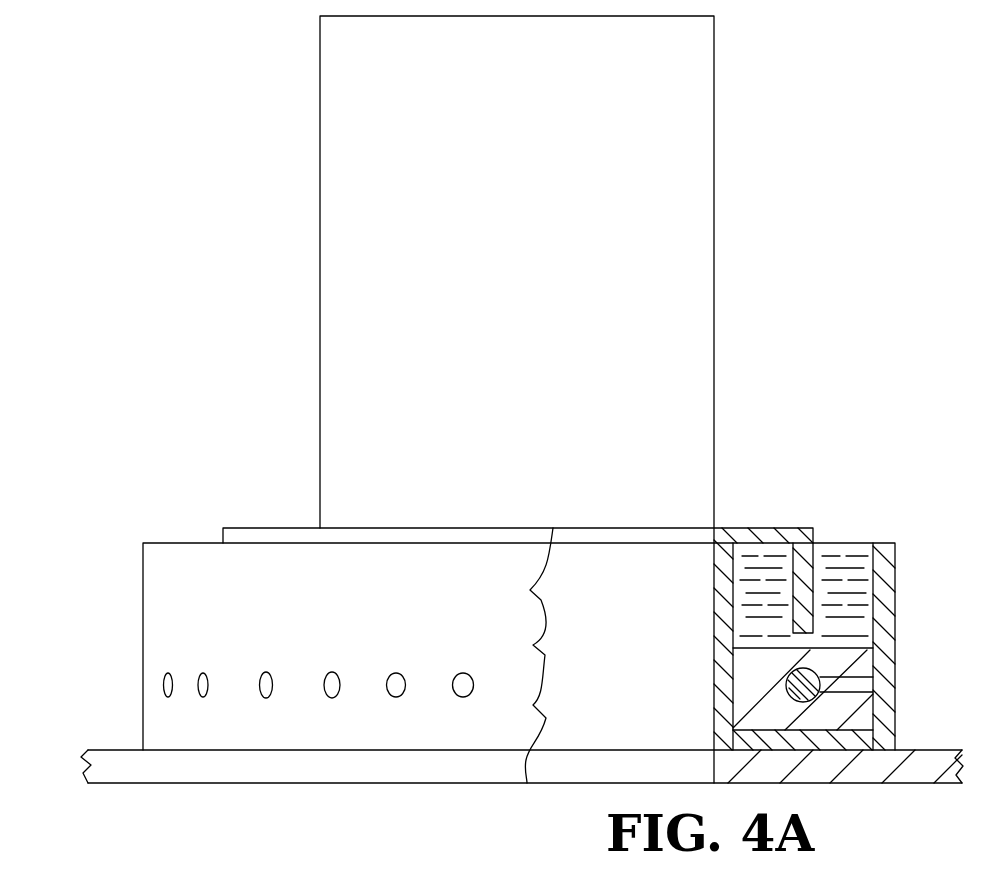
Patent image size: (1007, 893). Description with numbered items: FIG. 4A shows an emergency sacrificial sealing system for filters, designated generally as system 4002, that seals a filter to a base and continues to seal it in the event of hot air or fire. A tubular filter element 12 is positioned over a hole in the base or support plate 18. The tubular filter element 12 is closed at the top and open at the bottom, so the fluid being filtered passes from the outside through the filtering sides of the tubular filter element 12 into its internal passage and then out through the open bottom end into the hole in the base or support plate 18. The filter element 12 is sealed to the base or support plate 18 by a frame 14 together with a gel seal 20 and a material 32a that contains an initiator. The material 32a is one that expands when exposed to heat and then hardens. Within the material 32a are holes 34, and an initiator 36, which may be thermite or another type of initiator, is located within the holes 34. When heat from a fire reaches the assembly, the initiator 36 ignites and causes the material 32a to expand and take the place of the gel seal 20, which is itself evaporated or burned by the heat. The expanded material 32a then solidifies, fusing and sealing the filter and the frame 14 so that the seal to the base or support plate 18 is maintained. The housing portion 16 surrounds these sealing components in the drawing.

The display assembly 4002 is at (780, 94).
The tubular filter element 12 is at (553, 71).
The frame 14 is at (652, 528).
The housing 16 is at (464, 591).
The base or support plate 18 is at (270, 783).
The gel seal 20 is at (833, 553).
The material containing an initiator 32a is at (760, 665).
The holes 34 is at (476, 668).
The initiator 36 is at (790, 700).